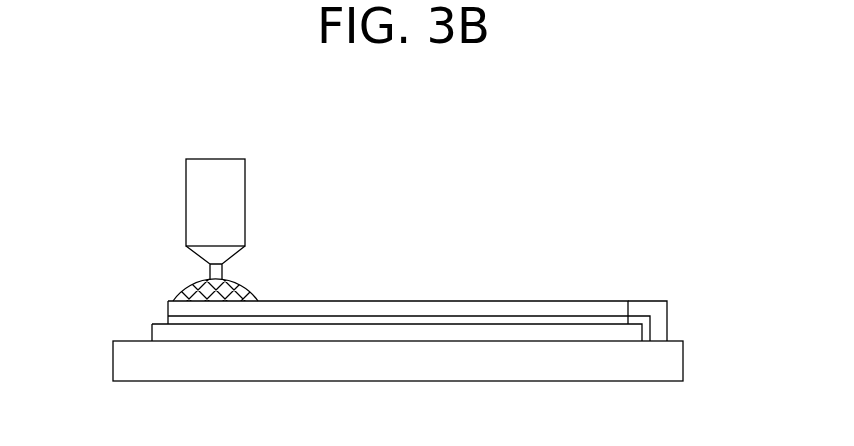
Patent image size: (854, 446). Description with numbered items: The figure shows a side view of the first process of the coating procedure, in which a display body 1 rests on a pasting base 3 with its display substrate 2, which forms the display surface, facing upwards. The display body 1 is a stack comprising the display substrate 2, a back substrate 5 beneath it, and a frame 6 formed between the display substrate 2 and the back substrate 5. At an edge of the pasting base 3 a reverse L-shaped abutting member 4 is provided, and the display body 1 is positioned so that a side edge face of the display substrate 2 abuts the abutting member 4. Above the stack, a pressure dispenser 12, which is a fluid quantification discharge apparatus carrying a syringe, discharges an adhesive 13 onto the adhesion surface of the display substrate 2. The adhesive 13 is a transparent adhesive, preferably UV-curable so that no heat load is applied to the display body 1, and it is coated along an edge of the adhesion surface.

The display body 1 is at (436, 303).
The display substrate 2 is at (466, 300).
The pasting base 3 is at (232, 382).
The abutting member 4 is at (668, 310).
The back substrate 5 is at (356, 338).
The frame 6 is at (430, 323).
The pressure dispenser 12 is at (213, 159).
The adhesive 13 is at (192, 284).